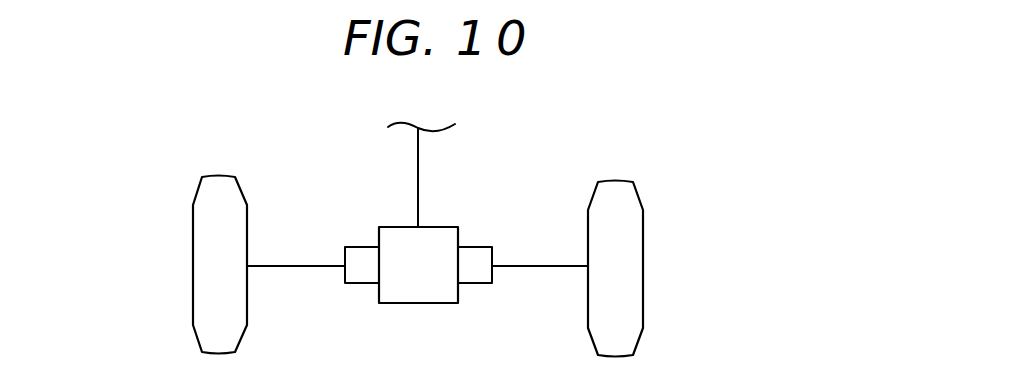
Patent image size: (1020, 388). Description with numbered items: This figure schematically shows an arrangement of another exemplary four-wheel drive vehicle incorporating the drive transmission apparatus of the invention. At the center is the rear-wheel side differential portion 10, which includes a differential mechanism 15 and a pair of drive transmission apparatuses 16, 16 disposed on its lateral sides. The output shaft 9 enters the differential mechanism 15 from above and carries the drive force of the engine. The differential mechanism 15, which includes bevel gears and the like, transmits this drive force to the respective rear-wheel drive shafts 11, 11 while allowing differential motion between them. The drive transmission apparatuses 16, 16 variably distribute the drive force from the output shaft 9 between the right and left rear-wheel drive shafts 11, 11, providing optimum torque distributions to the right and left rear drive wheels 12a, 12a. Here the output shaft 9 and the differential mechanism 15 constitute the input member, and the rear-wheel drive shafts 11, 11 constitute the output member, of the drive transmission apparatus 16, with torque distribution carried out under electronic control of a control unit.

The output shaft 9 is at (418, 160).
The rear-wheel side differential portion 10 is at (428, 280).
The rear-wheel drive shaft 11 is at (298, 266).
The rear wheel 12a is at (203, 220).
The differential mechanism 15 is at (403, 293).
The drive transmission apparatus 16 is at (358, 253).